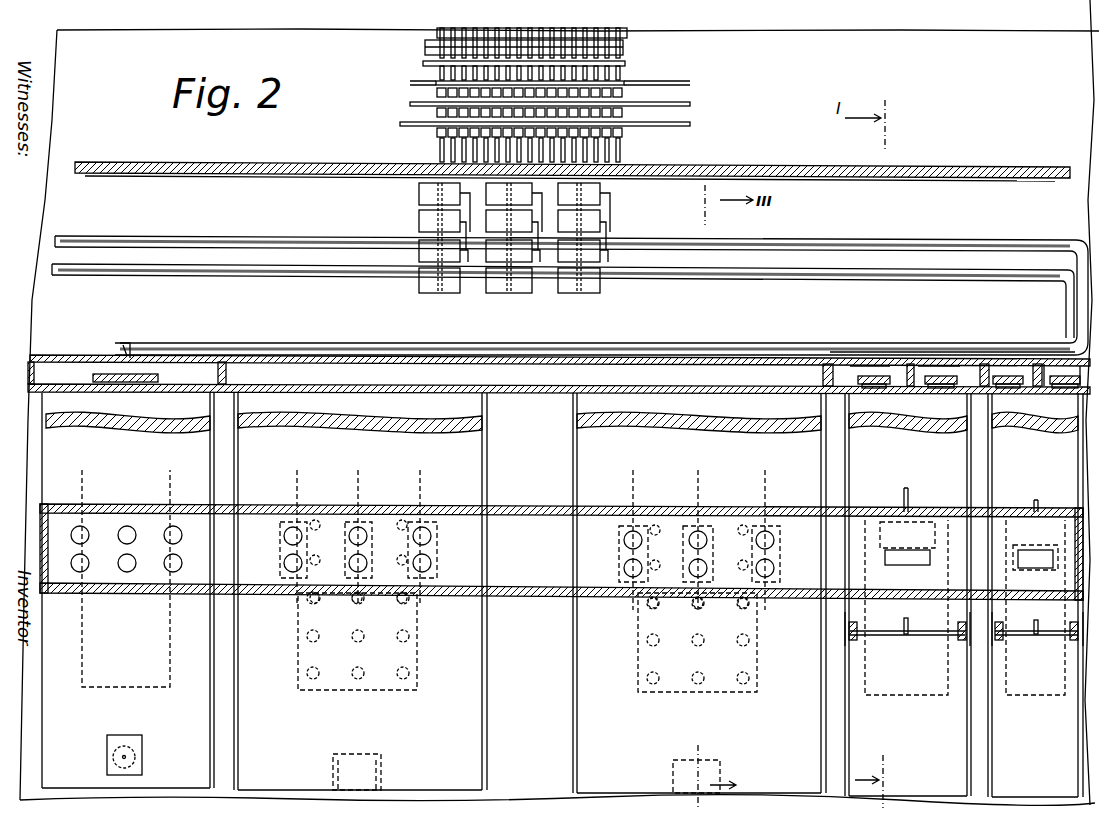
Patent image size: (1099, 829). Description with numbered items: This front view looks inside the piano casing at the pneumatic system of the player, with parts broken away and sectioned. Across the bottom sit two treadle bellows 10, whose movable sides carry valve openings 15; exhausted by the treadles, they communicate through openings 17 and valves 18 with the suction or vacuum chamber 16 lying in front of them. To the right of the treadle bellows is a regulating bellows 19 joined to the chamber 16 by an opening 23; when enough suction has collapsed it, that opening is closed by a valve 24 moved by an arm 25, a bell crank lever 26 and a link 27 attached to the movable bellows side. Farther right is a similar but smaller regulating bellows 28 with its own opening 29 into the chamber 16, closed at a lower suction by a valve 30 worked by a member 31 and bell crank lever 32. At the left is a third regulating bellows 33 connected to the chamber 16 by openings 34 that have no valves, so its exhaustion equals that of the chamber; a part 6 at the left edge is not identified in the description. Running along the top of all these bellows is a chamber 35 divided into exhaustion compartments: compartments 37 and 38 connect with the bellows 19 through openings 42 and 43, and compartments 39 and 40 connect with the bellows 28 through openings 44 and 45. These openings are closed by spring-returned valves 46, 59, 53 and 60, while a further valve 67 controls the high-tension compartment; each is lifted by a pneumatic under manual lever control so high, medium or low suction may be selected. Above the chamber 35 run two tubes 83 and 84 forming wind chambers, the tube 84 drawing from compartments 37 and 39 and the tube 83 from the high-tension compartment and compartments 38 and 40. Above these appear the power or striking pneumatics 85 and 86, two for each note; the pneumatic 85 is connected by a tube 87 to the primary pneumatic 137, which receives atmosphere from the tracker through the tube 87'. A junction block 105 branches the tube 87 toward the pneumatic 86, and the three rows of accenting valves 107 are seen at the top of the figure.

The bracket 6 is at (50, 378).
The treadle bellows 10 is at (575, 612).
The valve openings 15 is at (313, 636).
The suction or vacuum chamber 16 is at (488, 506).
The openings 17 is at (360, 532).
The valves 18 is at (293, 530).
The regulating bellows 19 is at (901, 664).
The opening 23 is at (905, 560).
The valve 24 is at (936, 524).
The arm 25 is at (908, 486).
The bell crank lever 26 is at (906, 636).
The link 27 is at (846, 626).
The regulating bellows 28 is at (1035, 581).
The opening 29 is at (1046, 562).
The valve 30 is at (1033, 562).
The member 31 is at (1040, 508).
The bell crank lever 32 is at (1080, 632).
The regulating bellows 33 is at (126, 603).
The openings 34 is at (172, 528).
The chamber 35 is at (668, 365).
The compartment 37 is at (890, 372).
The compartment 38 is at (962, 376).
The compartment 39 is at (1010, 374).
The compartment 40 is at (1047, 380).
The opening 42 is at (870, 392).
The opening 43 is at (942, 390).
The opening 44 is at (1010, 390).
The opening 45 is at (1064, 390).
The valve 46 is at (860, 376).
The valve 53 is at (1040, 380).
The valve 59 is at (935, 376).
The valve 60 is at (1075, 380).
The valve 67 is at (211, 372).
The tube 83 is at (880, 276).
The tube 84 is at (1000, 244).
The power or striking pneumatic 85 is at (420, 222).
The power or striking pneumatic 86 is at (420, 193).
The tube 87 is at (521, 95).
The tube 87' is at (560, 41).
The junction block 105 is at (425, 63).
The valves 107 is at (623, 83).
The primary pneumatic 137 is at (430, 45).